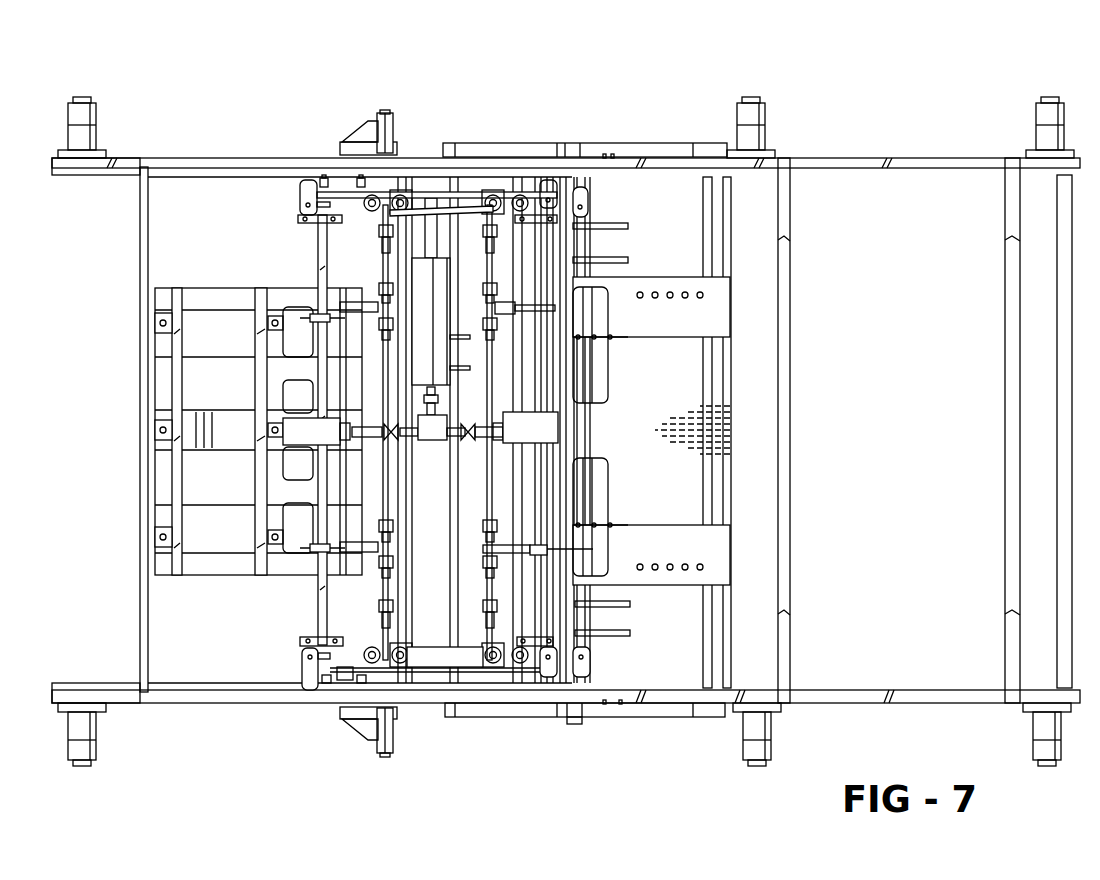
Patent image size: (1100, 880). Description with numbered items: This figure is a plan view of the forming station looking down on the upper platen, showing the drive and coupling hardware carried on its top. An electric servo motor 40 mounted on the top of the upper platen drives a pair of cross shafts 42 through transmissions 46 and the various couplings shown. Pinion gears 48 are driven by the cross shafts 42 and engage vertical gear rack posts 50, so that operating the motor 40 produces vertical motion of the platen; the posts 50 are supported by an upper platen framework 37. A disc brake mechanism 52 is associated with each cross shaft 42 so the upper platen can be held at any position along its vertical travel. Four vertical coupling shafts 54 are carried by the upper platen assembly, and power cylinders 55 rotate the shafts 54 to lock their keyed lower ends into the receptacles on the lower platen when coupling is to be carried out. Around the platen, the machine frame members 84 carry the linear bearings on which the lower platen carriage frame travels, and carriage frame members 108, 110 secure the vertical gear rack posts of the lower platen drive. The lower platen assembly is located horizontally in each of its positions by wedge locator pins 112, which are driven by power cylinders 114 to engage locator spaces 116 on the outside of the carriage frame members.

The upper platen framework 37 is at (362, 200).
The electric servo motor 40 is at (449, 258).
The cross shafts 42 is at (540, 250).
The transmissions 46 is at (302, 442).
The pinion gears 48 is at (303, 205).
The vertical gear rack posts 50 is at (303, 655).
The disc brake mechanism 52 is at (300, 330).
The shafts 54 is at (508, 213).
The power cylinders 55 is at (376, 236).
The frame members 84 is at (400, 195).
The carriage frame member 108 is at (500, 172).
The carriage frame member 110 is at (345, 180).
The wedge locator pins 112 is at (397, 148).
The power cylinders 114 is at (393, 117).
The locator spaces 116 is at (368, 125).